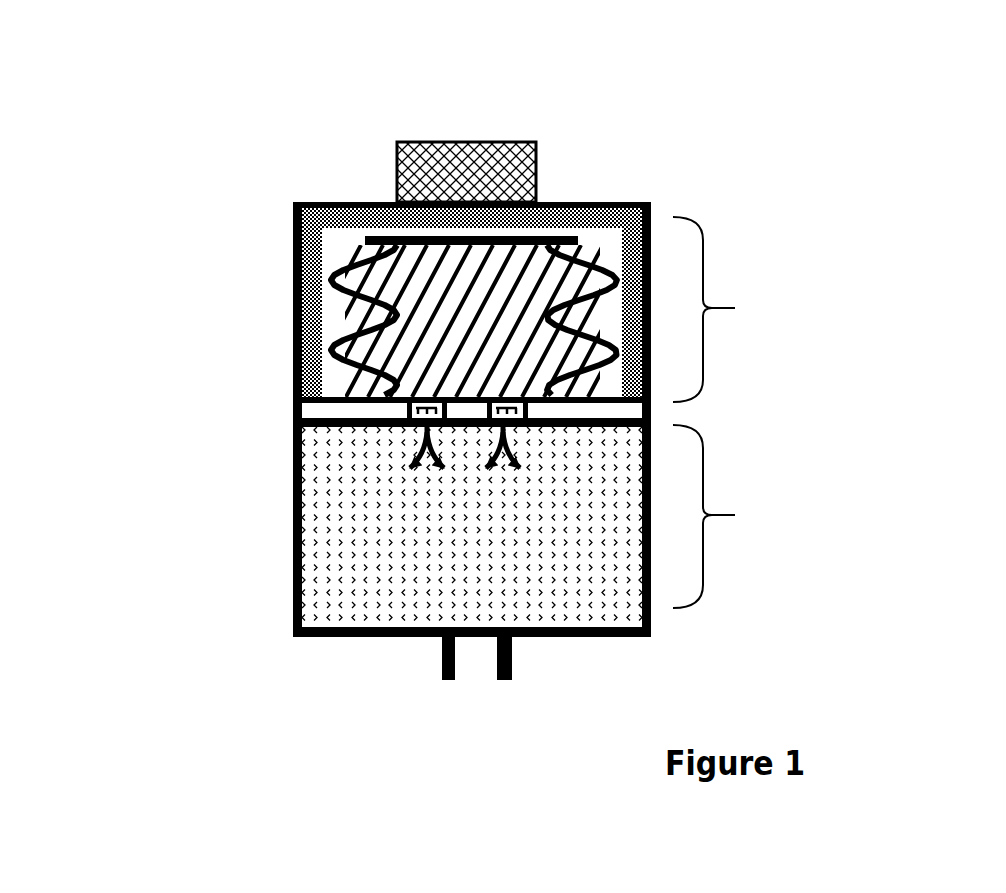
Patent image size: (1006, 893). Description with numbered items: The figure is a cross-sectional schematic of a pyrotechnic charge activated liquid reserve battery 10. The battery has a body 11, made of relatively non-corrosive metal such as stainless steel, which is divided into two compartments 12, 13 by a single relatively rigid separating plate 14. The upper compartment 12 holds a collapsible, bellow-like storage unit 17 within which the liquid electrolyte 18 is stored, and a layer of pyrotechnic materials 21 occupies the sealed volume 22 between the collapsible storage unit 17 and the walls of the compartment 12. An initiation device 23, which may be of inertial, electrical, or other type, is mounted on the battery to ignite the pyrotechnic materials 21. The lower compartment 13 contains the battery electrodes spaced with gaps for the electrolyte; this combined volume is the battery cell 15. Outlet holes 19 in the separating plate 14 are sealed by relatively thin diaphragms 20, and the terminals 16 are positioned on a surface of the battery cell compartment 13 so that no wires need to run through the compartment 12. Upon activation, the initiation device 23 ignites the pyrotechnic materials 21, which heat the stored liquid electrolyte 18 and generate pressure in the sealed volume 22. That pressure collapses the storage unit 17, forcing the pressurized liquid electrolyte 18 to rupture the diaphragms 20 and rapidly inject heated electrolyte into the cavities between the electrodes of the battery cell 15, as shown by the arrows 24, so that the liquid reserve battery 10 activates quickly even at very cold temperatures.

The liquid reserve battery 10 is at (850, 92).
The body 11 is at (272, 570).
The compartment 12 is at (739, 309).
The compartment 13 is at (733, 516).
The separating plate 14 is at (335, 432).
The battery cell 15 is at (387, 555).
The terminals 16 is at (462, 695).
The collapsible storage unit 17 is at (600, 263).
The liquid electrolyte 18 is at (500, 292).
The outlet holes 19 is at (398, 406).
The diaphragms 20 is at (425, 387).
The pyrotechnic materials 21 is at (347, 233).
The sealed volume 22 is at (598, 320).
The initiation device 23 is at (473, 165).
The arrows 24 is at (408, 482).